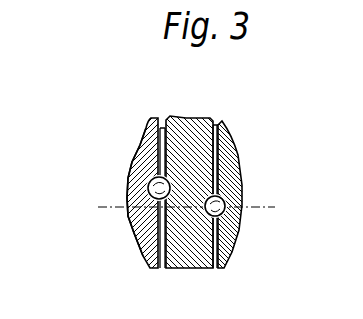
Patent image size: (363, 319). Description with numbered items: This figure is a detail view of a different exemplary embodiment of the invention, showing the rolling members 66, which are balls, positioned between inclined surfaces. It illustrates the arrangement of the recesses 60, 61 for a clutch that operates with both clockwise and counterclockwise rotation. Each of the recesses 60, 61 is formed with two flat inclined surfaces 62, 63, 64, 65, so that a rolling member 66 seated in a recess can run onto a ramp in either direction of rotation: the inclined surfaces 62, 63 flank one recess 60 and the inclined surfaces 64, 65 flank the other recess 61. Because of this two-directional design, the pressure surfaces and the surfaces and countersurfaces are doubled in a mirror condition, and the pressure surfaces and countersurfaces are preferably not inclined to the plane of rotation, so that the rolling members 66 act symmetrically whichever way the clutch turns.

The recess 60 is at (130, 175).
The recess 61 is at (236, 156).
The flat inclined surface 62 is at (147, 191).
The flat inclined surface 63 is at (152, 177).
The flat inclined surface 64 is at (218, 237).
The flat inclined surface 65 is at (187, 194).
The rolling members 66 is at (133, 224).